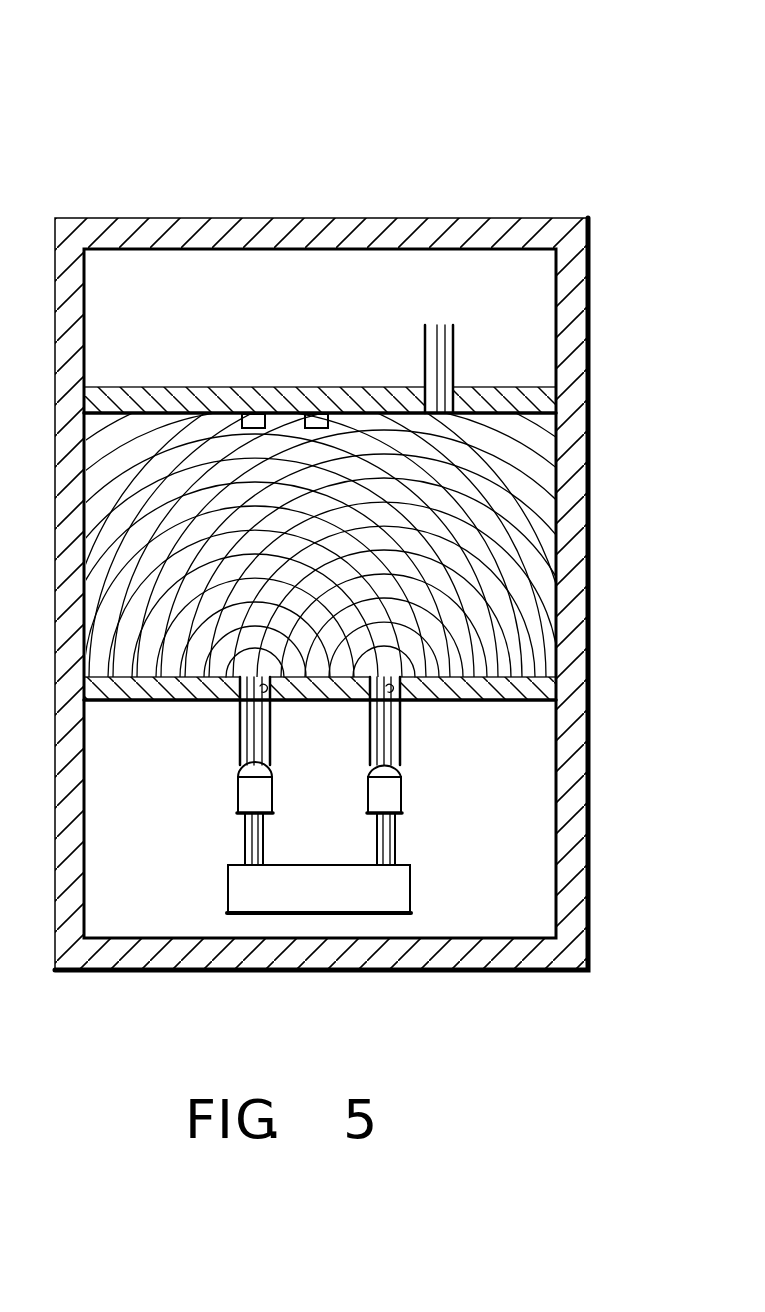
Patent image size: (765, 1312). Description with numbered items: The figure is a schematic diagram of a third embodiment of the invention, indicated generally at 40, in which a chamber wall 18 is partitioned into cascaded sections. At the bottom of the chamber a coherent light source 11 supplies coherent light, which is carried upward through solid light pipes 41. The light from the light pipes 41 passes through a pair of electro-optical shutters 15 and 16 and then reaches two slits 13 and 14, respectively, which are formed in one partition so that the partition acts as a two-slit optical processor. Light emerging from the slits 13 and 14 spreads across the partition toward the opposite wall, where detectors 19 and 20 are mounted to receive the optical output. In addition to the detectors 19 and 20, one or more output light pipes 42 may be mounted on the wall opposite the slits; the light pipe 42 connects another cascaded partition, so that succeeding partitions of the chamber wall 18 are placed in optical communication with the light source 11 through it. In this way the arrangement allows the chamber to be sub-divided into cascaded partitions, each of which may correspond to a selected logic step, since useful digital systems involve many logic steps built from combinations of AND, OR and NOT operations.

The light emitting apparatus 40 is at (385, 143).
The chamber wall 18 is at (567, 463).
The output light pipe 42 is at (448, 345).
The detector 20 is at (248, 414).
The detector 19 is at (318, 414).
The slit 13 is at (258, 695).
The slit 14 is at (386, 690).
The light pipe 41 is at (240, 740).
The electro-optical shutter 15 is at (238, 790).
The electro-optical shutter 16 is at (369, 798).
The coherent light source 11 is at (392, 892).